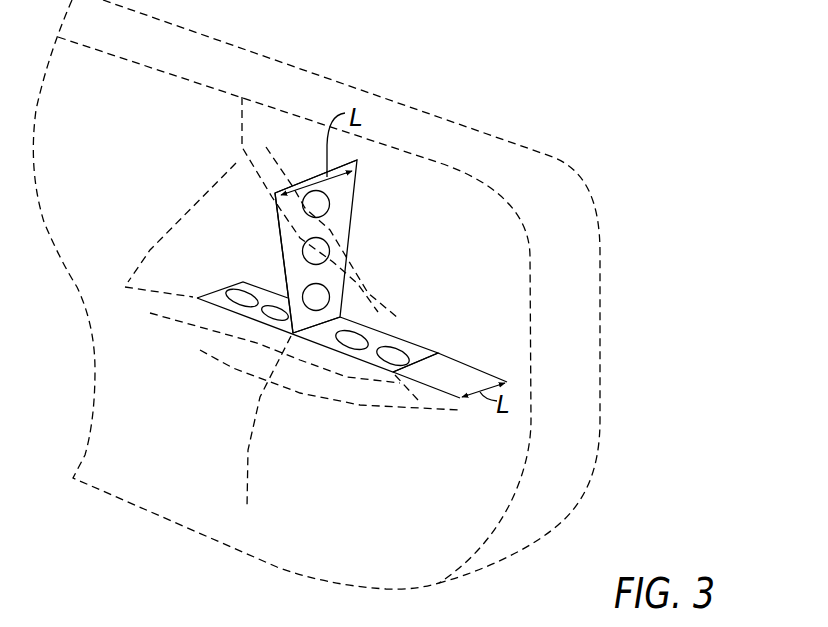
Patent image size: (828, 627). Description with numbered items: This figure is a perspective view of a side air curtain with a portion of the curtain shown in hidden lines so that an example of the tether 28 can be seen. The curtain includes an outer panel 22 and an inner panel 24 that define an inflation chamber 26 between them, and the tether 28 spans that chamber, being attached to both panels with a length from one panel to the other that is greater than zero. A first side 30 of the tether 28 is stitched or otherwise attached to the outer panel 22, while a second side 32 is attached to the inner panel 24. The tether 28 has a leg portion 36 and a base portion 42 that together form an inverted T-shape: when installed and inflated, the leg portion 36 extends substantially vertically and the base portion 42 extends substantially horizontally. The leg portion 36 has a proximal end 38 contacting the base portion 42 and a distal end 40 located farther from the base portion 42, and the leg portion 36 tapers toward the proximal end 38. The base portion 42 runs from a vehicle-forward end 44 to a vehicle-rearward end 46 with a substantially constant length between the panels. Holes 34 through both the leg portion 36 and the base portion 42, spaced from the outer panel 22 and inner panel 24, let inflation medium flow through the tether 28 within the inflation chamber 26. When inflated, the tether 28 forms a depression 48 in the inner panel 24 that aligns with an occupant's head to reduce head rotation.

The outer panel 22 is at (562, 243).
The inner panel 24 is at (485, 227).
The inflation chamber 26 is at (580, 317).
The tether 28 is at (320, 236).
The first side 30 is at (357, 179).
The second side 32 is at (283, 275).
The hole 34 is at (330, 296).
The leg portion 36 is at (270, 227).
The proximal end 38 is at (345, 318).
The distal end 40 is at (313, 177).
The base portion 42 is at (330, 353).
The vehicle-forward end 44 is at (415, 361).
The vehicle-rearward end 46 is at (207, 295).
The depression 48 is at (230, 246).